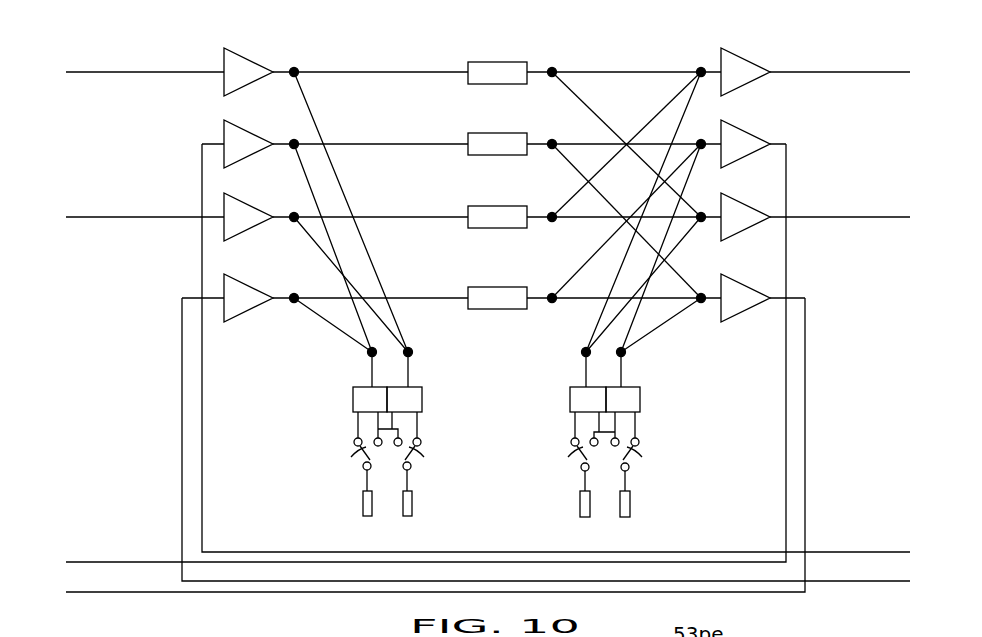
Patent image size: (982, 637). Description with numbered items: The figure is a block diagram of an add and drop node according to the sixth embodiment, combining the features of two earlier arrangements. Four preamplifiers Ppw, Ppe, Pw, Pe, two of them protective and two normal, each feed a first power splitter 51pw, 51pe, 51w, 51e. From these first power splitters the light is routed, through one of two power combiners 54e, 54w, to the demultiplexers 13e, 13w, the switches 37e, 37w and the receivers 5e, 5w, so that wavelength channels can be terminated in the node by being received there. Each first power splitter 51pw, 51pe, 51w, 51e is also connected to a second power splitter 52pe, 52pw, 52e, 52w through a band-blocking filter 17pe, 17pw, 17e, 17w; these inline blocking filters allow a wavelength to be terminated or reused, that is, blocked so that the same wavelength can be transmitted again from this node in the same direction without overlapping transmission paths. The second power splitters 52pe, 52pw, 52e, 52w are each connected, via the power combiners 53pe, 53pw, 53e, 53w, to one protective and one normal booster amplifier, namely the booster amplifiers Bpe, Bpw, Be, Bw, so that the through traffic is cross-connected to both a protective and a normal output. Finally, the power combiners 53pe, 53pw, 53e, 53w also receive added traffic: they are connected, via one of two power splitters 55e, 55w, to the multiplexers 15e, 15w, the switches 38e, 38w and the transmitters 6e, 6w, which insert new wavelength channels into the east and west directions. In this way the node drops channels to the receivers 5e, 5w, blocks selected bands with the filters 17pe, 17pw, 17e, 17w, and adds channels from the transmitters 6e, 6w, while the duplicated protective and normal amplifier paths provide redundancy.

The preamplifier Ppw is at (245, 57).
The preamplifier Ppe is at (247, 129).
The preamplifier Pw is at (247, 202).
The preamplifier Pe is at (247, 281).
The protective booster amplifier Bpe is at (740, 60).
The protective booster amplifier Bpw is at (740, 130).
The booster amplifier Be is at (722, 195).
The booster amplifier Bw is at (722, 276).
The band-blocking filter 17pe is at (500, 62).
The band-blocking filter 17pw is at (496, 133).
The band-blocking filter 17e is at (505, 206).
The band-blocking filter 17w is at (503, 287).
The first power splitter 51pw is at (280, 44).
The first power splitter 51pe is at (294, 141).
The first power splitter 51w is at (294, 214).
The first power splitter 51e is at (292, 295).
The second power splitter 52pe is at (553, 72).
The second power splitter 52pw is at (566, 112).
The second power splitter 52e is at (553, 215).
The second power splitter 52w is at (553, 296).
The power combiner 53pe is at (700, 72).
The power combiner 53pw is at (702, 142).
The power combiner 53e is at (702, 215).
The power combiner 53w is at (702, 296).
The power combiner 54e is at (370, 352).
The power combiner 54w is at (410, 354).
The power splitter 55e is at (584, 353).
The power splitter 55w is at (622, 355).
The demultiplexer 13e is at (353, 398).
The demultiplexer 13w is at (422, 398).
The multiplexer 15e is at (570, 402).
The multiplexer 15w is at (640, 402).
The switch 37e is at (353, 442).
The switch 37w is at (422, 442).
The switch 38e is at (573, 443).
The switch 38w is at (637, 442).
The receiver 5e is at (362, 495).
The receiver 5w is at (413, 510).
The transmitter 6e is at (584, 517).
The transmitter 6w is at (630, 497).